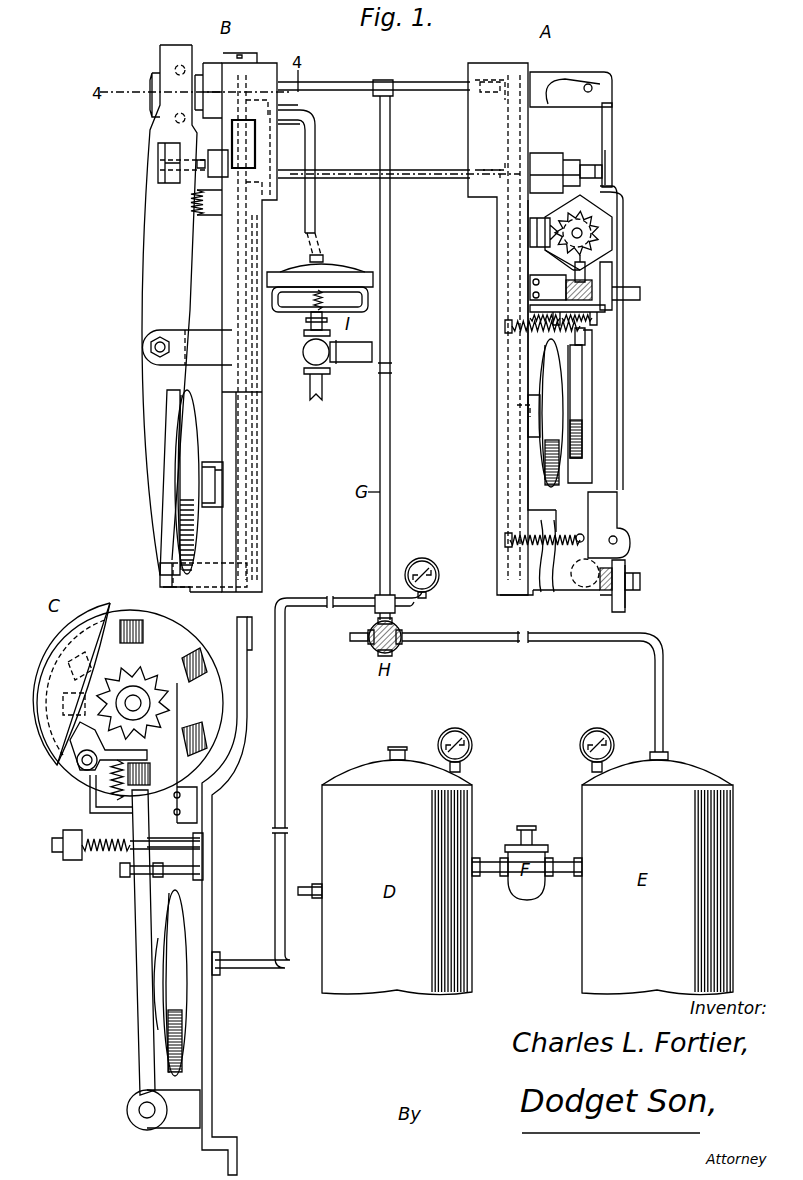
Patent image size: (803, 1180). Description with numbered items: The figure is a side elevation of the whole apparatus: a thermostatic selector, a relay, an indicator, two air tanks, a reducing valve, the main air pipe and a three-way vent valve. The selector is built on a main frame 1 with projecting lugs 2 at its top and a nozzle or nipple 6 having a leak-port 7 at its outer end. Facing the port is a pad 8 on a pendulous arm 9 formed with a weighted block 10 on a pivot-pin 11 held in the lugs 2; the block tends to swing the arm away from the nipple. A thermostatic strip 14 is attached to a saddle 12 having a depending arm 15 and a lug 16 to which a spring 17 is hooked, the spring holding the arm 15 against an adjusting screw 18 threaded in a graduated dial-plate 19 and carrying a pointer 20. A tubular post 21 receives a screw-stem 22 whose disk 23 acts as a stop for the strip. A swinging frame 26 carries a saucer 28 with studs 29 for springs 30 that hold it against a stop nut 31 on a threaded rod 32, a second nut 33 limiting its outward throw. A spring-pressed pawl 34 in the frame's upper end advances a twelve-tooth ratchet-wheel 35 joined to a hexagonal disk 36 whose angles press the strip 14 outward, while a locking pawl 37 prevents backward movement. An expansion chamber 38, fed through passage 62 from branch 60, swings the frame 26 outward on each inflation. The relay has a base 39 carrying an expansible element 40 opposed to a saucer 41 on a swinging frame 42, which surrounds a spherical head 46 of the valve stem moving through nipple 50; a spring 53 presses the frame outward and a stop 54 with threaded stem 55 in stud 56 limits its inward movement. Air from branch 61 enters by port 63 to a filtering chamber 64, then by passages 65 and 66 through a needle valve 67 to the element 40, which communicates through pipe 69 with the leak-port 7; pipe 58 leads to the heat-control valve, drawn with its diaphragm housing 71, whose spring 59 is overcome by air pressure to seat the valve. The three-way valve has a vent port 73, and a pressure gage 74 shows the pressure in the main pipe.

The main frame 1 is at (510, 268).
The projecting lugs 2 is at (575, 72).
The nozzle or nipple 6 is at (580, 160).
The leak-port 7 is at (616, 190).
The valve or pad 8 is at (604, 168).
The pendulous arm or lid 9 is at (612, 110).
The weighted block 10 is at (560, 92).
The pivot-pin 11 is at (592, 86).
The saddle 12 is at (620, 532).
The thermostatic strip 14 is at (625, 452).
The depending arm 15 is at (616, 560).
The perforated ear or lug 16 is at (578, 534).
The spring 17 is at (550, 592).
The adjusting screw 18 is at (604, 592).
The graduated dial-plate 19 is at (626, 610).
The pointer or indicator 20 is at (640, 582).
The tubular post 21 is at (540, 285).
The screw-stem 22 is at (594, 272).
The disk 23 is at (618, 276).
The swinging frame 26 is at (594, 372).
The disk or saucer 28 is at (584, 398).
The stems or studs 29 is at (590, 340).
The spring 30 is at (535, 338).
The stop 31 is at (530, 316).
The threaded rod or stem 32 is at (530, 321).
The second stop nut 33 is at (606, 318).
The slidable pawl or dog 34 is at (588, 264).
The ratchet-wheel 35 is at (598, 232).
The hexagonal disk 36 is at (600, 210).
The locking pawl or dog 37 is at (530, 231).
The expansion device or chamber 38 is at (552, 422).
The base 39 is at (256, 525).
The expansible element 40 is at (195, 417).
The disk or saucer 41 is at (170, 437).
The swinging frame 42 is at (160, 48).
The head 46 is at (151, 85).
The nipple 50 is at (210, 63).
The spring 53 is at (205, 214).
The stop 54 is at (157, 155).
The threaded stem 55 is at (175, 165).
The stud or projection 56 is at (207, 158).
The pipe 58 is at (316, 150).
The spring 59 is at (324, 297).
The branch 60 is at (374, 93).
The branch pipe 61 is at (307, 108).
The passage 62 is at (488, 80).
The port 63 is at (258, 268).
The filtering chamber 64 is at (245, 118).
The passage 65 is at (232, 340).
The passage 66 is at (205, 475).
The needle valve 67 is at (245, 565).
The pipe 69 is at (430, 170).
The diaphragm 71 is at (332, 282).
The vent port 73 is at (350, 637).
The pressure gage 74 is at (436, 582).